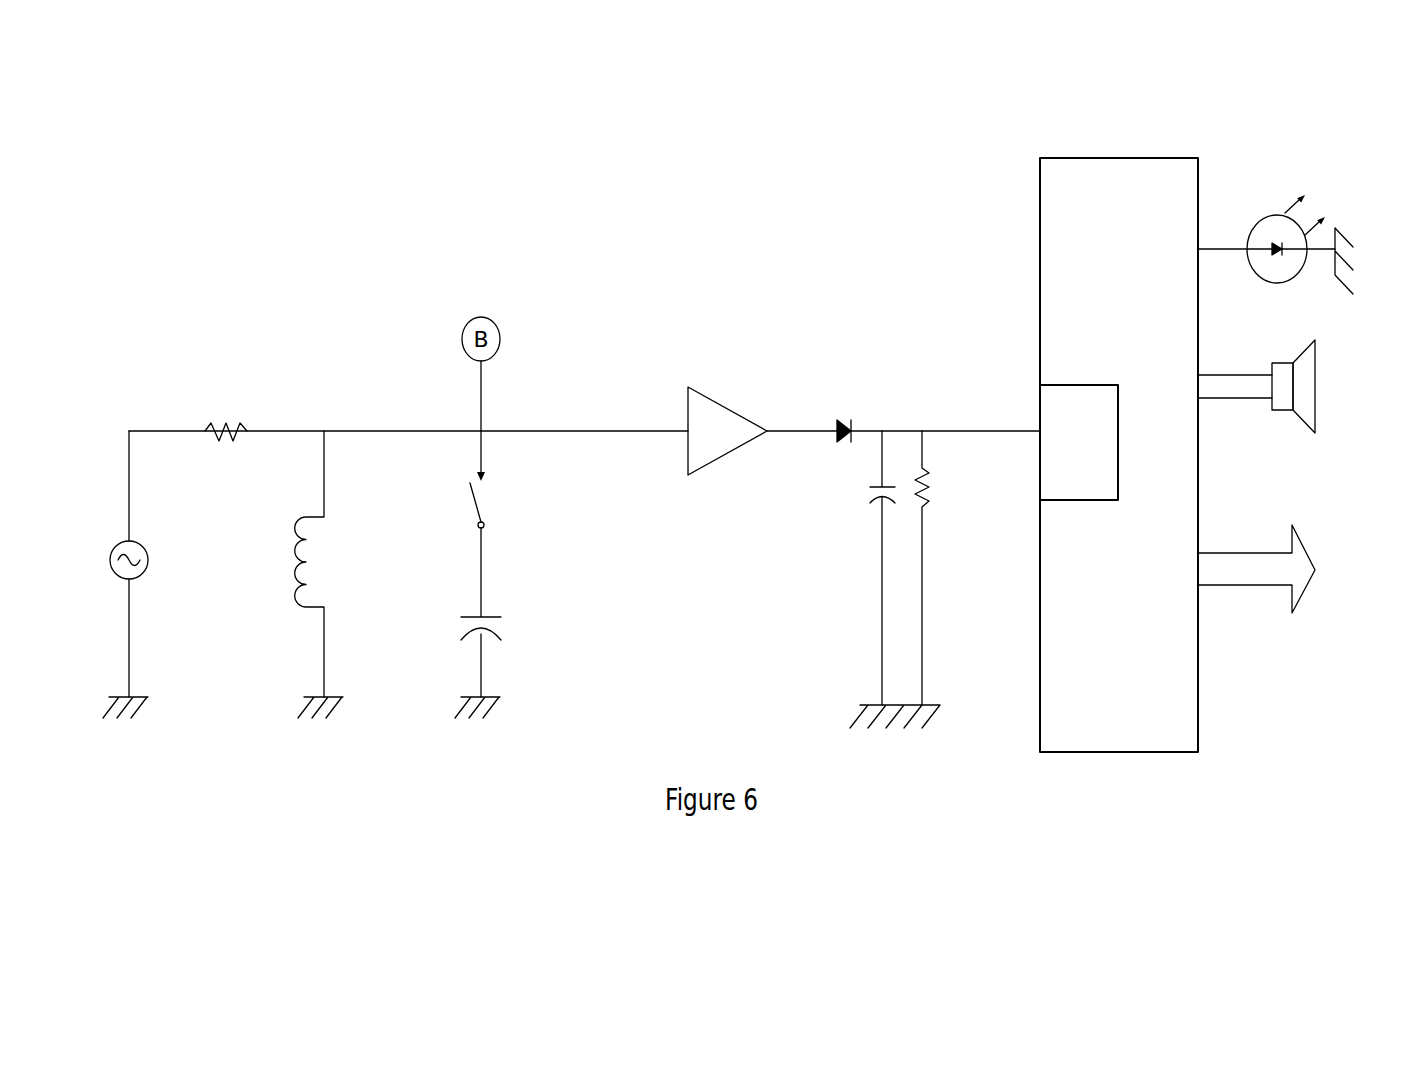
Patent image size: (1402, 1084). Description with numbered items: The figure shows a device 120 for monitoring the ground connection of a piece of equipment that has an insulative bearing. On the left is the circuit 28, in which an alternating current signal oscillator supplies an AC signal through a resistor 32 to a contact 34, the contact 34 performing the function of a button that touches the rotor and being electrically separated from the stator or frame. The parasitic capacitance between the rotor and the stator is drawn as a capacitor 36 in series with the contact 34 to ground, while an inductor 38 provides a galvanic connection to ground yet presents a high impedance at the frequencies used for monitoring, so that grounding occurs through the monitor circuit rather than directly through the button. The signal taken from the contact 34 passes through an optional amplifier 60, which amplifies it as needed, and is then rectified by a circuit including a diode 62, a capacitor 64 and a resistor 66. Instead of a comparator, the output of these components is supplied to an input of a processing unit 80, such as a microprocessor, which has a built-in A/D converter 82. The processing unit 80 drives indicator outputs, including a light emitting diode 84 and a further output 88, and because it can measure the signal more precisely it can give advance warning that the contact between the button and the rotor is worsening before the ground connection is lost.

The device for monitoring the ground connection 120 is at (624, 199).
The circuit 28 is at (300, 305).
The resistor 32 is at (223, 420).
The contact 34 is at (480, 502).
The capacitor 36 is at (498, 625).
The inductor 38 is at (321, 583).
The amplifier 60 is at (728, 407).
The diode 62 is at (848, 427).
The capacitor 64 is at (877, 502).
The resistor 66 is at (922, 507).
The processing unit 80 is at (1102, 157).
The A/D converter 82 is at (1060, 408).
The light emitting diode indicator 84 is at (1277, 205).
The output 88 is at (1305, 547).